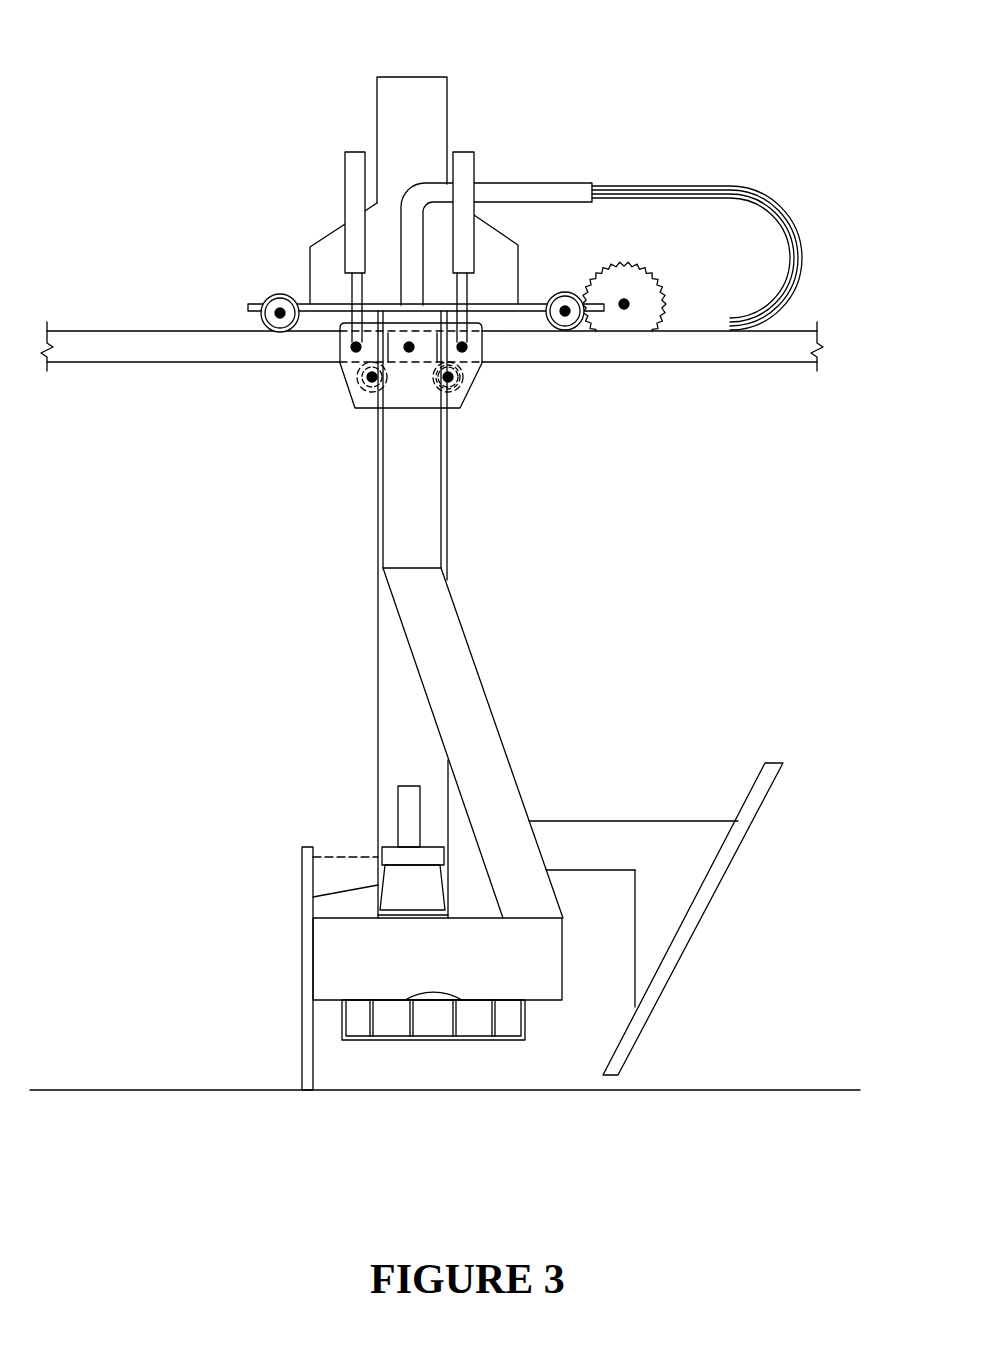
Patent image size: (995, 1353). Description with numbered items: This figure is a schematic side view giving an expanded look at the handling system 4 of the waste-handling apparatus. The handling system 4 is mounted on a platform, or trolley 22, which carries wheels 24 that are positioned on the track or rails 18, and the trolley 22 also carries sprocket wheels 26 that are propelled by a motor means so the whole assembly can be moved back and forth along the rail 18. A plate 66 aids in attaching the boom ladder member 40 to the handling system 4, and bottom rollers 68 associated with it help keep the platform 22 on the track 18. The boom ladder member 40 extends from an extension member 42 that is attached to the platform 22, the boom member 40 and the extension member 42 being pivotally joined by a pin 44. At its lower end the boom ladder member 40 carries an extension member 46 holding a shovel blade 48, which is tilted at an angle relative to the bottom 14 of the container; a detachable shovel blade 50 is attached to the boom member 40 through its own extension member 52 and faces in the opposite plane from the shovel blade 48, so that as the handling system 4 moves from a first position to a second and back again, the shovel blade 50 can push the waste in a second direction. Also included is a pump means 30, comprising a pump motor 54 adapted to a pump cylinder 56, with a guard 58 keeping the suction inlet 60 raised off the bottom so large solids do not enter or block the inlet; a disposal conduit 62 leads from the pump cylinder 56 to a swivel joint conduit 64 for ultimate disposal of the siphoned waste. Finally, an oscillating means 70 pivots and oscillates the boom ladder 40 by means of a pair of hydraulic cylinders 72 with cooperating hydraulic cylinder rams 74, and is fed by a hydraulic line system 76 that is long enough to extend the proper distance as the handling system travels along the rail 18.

The handling system 4 is at (165, 99).
The bottom 14 is at (800, 1088).
The rails 18 is at (800, 333).
The platform 22 is at (262, 306).
The wheels 24 is at (580, 330).
The sprocket wheels 26 is at (642, 287).
The pump means 30 is at (318, 914).
The boom ladder member 40 is at (393, 689).
The extension member 42 is at (387, 342).
The pin 44 is at (409, 352).
The extension member 46 is at (663, 837).
The shovel blade 48 is at (705, 887).
The detachable shovel blade 50 is at (300, 869).
The extension member 52 is at (327, 870).
The pump motor 54 is at (410, 820).
The pump cylinder 56 is at (537, 988).
The guard 58 is at (353, 1030).
The suction inlet 60 is at (433, 997).
The disposal conduit 62 is at (408, 535).
The swivel joint conduit 64 is at (433, 128).
The plate 66 is at (480, 380).
The bottom rollers 68 is at (368, 395).
The oscillating means 70 is at (512, 159).
The hydraulic cylinders 72 is at (458, 180).
The hydraulic cylinder rams 74 is at (353, 290).
The hydraulic line system 76 is at (750, 188).